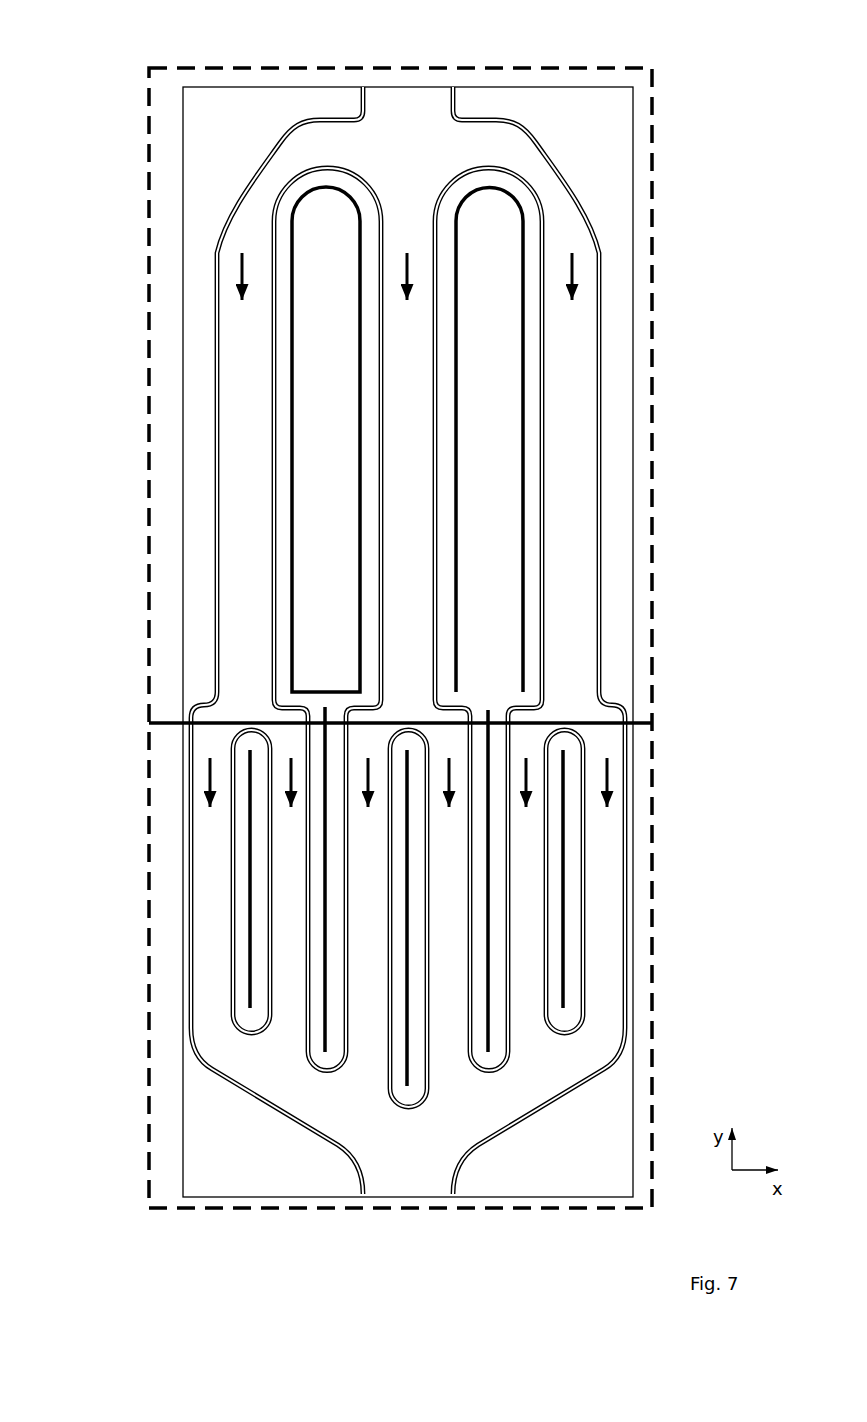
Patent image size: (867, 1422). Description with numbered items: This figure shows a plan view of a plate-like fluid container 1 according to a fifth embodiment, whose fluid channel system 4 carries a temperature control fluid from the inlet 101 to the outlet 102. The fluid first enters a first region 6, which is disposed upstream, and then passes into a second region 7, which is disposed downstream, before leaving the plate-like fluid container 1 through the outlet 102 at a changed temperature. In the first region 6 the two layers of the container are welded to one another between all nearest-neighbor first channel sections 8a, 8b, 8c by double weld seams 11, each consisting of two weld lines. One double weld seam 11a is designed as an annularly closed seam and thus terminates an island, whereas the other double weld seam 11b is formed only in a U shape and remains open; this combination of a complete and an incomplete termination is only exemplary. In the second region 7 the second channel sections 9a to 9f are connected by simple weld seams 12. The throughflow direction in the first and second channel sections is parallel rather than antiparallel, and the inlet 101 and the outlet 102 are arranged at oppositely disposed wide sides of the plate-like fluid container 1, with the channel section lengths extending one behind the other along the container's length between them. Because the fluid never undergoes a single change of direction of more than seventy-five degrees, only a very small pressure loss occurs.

The plate-like fluid container 1 is at (667, 57).
The fluid channel system 4 is at (272, 178).
The first region 6 is at (655, 162).
The second region 7 is at (653, 898).
The first channel section 8a is at (563, 403).
The first channel section 8b is at (410, 500).
The first channel section 8c is at (238, 478).
The second channel section 9a is at (597, 967).
The second channel section 9f is at (212, 857).
The double weld seam 11 is at (452, 310).
The double weld seam 11a is at (290, 330).
The double weld seam 11b is at (527, 580).
The simple weld seam 12 is at (558, 838).
The inlet 101 is at (413, 107).
The outlet 102 is at (407, 1178).